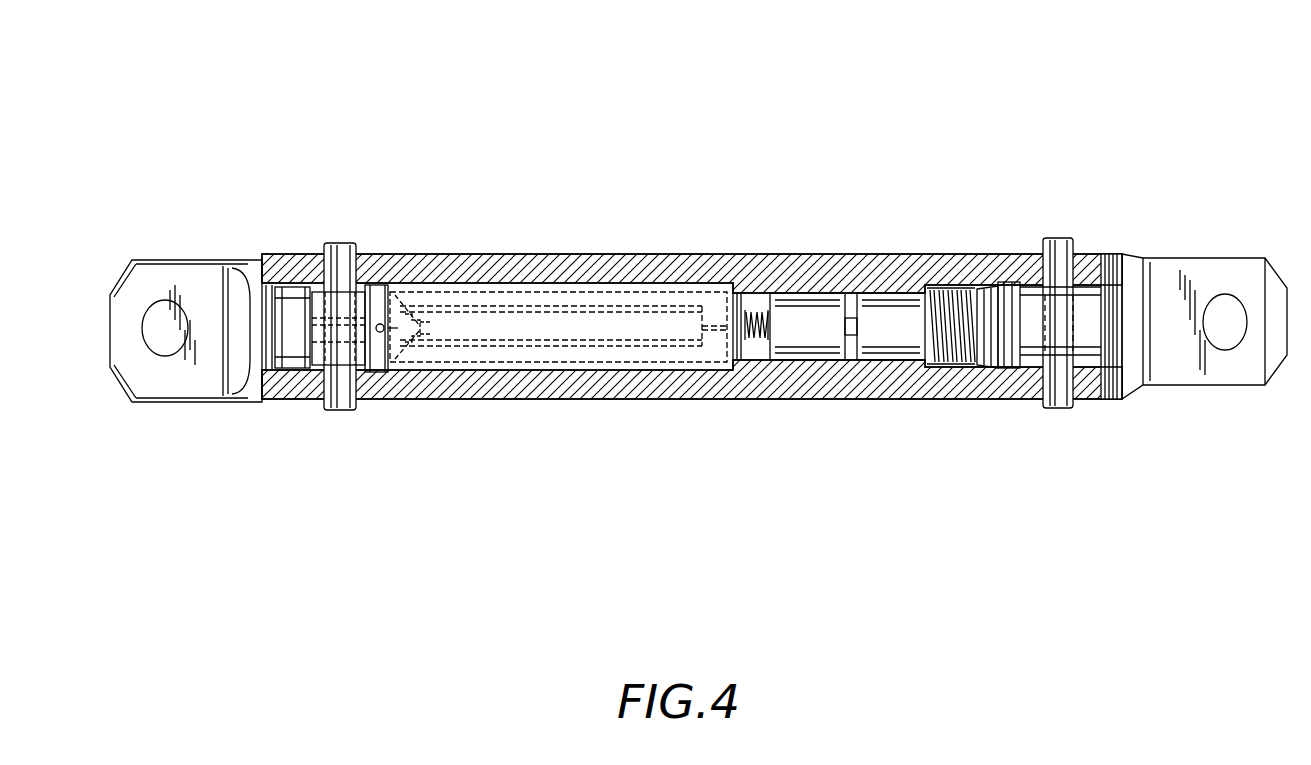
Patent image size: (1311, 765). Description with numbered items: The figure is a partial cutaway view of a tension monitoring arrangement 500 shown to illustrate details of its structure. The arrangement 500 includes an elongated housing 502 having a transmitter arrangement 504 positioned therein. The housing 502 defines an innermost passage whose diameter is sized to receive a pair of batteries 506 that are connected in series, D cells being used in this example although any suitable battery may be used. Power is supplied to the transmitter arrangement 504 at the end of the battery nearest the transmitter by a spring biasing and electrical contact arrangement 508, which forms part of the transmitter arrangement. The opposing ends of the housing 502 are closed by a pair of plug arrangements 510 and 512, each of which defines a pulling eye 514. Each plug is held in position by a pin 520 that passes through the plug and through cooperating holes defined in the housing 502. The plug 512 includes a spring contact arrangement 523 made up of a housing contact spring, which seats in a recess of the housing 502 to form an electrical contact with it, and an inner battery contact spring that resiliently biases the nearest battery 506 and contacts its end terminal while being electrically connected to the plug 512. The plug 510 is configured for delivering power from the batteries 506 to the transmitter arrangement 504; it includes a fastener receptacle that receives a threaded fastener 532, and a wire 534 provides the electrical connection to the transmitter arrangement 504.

The tension monitoring arrangement 500 is at (653, 108).
The housing 502 is at (828, 183).
The transmitter arrangement 504 is at (463, 373).
The batteries 506 is at (822, 345).
The spring biasing and electrical contact arrangement 508 is at (757, 342).
The plug arrangement 510 is at (108, 300).
The plug arrangement 512 is at (1290, 360).
The pulling eye 514 is at (172, 355).
The pin 520 is at (1052, 407).
The spring contact arrangement 523 is at (945, 355).
The threaded fastener 532 is at (427, 333).
The wire 534 is at (440, 303).